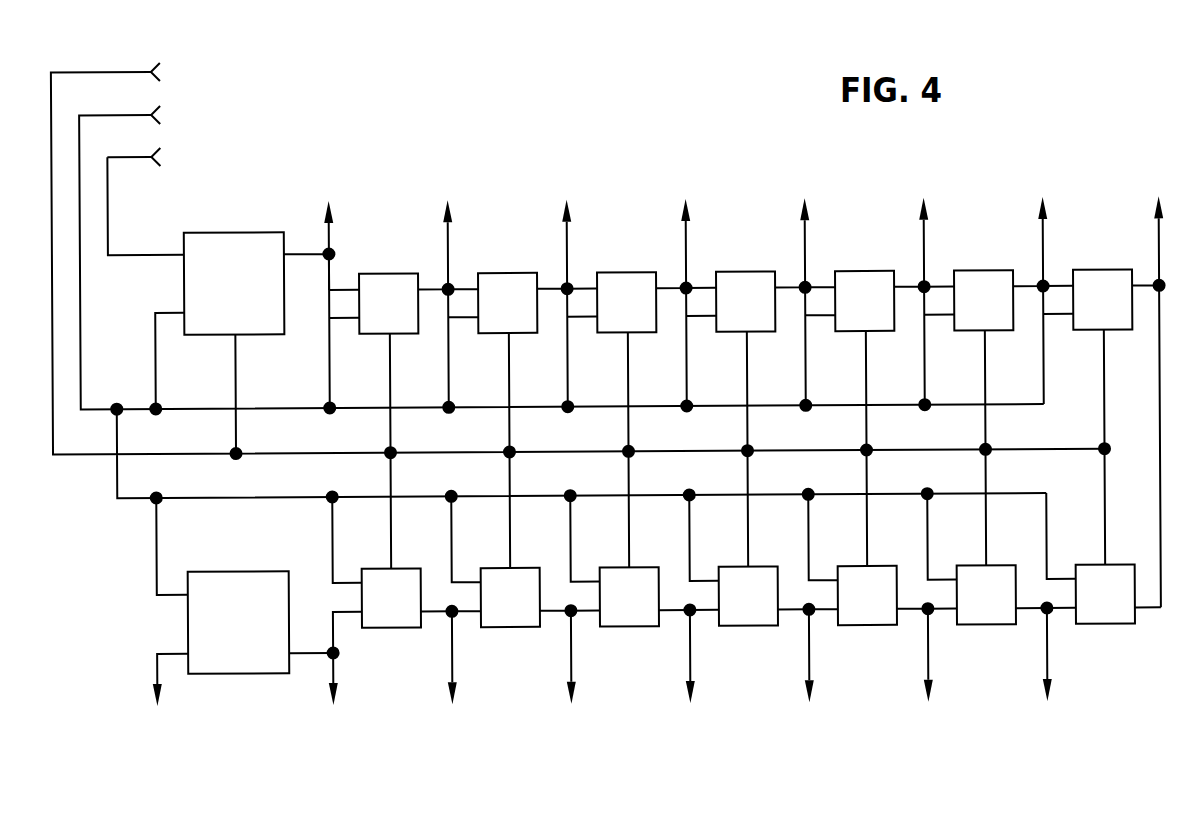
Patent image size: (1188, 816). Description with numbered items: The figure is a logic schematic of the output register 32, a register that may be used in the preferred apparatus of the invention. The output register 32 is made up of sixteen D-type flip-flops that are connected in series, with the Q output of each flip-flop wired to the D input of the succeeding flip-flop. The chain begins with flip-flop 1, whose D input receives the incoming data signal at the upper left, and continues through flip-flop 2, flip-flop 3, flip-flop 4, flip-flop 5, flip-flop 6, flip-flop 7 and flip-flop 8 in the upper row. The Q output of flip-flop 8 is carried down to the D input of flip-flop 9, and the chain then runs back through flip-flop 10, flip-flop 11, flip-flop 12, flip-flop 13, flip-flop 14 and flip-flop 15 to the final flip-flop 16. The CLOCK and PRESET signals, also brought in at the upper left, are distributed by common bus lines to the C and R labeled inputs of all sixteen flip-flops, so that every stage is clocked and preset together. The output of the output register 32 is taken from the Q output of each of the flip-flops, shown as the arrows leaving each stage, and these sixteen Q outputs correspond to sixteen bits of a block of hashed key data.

The D-type flip-flop 1 is at (221, 308).
The D-type flip-flop 2 is at (389, 370).
The D-type flip-flop 3 is at (508, 370).
The D-type flip-flop 4 is at (627, 369).
The D-type flip-flop 5 is at (746, 368).
The D-type flip-flop 6 is at (865, 368).
The D-type flip-flop 7 is at (984, 367).
The D-type flip-flop 8 is at (1104, 387).
The D-type flip-flop 9 is at (1101, 612).
The D-type flip-flop 10 is at (980, 609).
The D-type flip-flop 11 is at (861, 610).
The D-type flip-flop 12 is at (742, 611).
The D-type flip-flop 13 is at (623, 611).
The D-type flip-flop 14 is at (505, 612).
The D-type flip-flop 15 is at (386, 613).
The D-type flip-flop 16 is at (239, 613).
The output register 32 is at (549, 112).